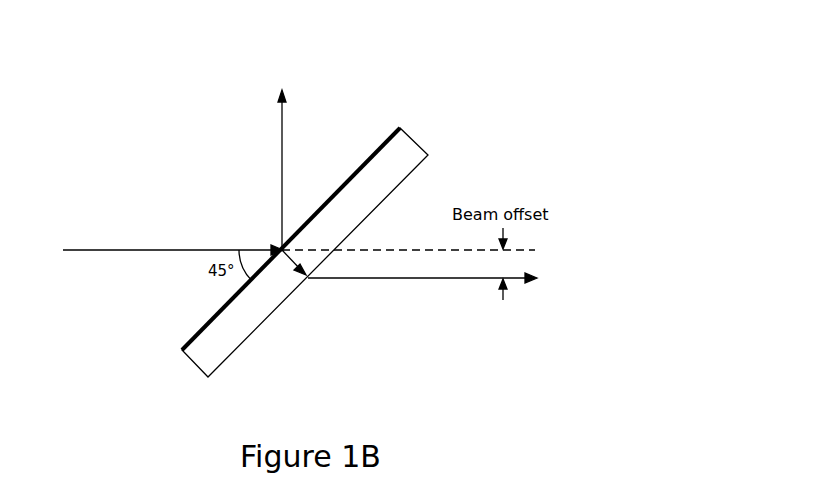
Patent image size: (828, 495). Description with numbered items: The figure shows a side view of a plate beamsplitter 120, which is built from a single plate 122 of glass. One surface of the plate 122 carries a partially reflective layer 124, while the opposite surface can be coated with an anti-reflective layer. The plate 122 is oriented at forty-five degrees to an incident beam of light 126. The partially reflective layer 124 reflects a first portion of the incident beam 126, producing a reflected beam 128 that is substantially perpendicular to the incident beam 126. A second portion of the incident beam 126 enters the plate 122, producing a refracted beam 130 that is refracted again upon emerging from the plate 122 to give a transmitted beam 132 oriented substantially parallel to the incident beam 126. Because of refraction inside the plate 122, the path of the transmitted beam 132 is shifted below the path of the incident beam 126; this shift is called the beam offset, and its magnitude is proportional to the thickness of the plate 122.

The plate beamsplitter 120 is at (525, 99).
The plate 122 is at (405, 175).
The partially reflective layer 124 is at (386, 140).
The incident beam of light 126 is at (105, 250).
The reflected beam 128 is at (280, 118).
The refracted beam 130 is at (292, 275).
The transmitted beam 132 is at (442, 293).